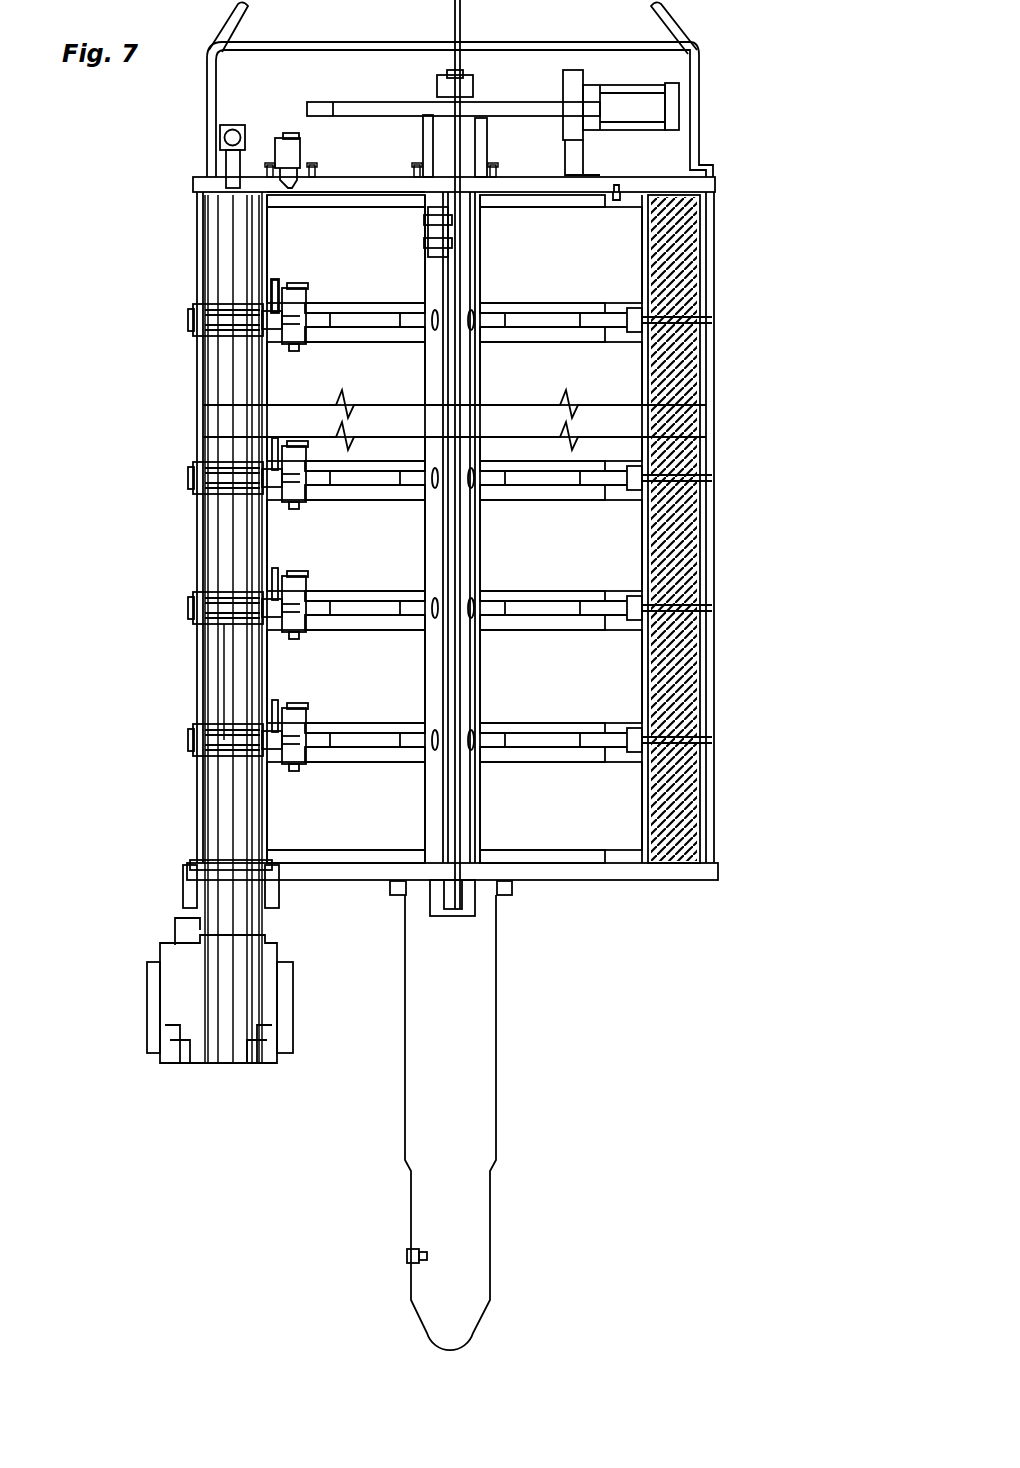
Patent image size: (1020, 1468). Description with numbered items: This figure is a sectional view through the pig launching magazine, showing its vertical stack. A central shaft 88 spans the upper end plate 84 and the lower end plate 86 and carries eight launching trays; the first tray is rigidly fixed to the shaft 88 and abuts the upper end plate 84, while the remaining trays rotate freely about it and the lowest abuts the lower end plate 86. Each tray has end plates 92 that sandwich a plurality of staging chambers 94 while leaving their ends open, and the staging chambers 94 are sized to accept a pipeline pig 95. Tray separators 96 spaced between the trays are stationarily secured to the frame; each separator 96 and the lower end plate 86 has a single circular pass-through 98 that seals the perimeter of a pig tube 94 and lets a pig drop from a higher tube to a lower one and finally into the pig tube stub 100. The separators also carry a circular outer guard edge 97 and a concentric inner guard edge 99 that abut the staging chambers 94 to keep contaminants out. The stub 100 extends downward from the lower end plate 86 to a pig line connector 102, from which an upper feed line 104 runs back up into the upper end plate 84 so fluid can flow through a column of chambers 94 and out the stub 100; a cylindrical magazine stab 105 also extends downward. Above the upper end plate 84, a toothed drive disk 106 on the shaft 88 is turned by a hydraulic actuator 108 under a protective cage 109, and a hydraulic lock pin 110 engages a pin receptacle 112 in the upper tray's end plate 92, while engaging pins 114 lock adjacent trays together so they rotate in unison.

The upper end plate 84 is at (707, 183).
The lower end plate 86 is at (690, 870).
The central shaft 88 is at (480, 870).
The tray end plate 92 is at (312, 342).
The staging chamber 94 is at (205, 350).
The pipeline pig 95 is at (700, 248).
The tray separator 96 is at (195, 612).
The circular outer guard edge 97 is at (195, 605).
The circular pass-through 98 is at (222, 635).
The circular inner guard edge 99 is at (275, 592).
The pig tube stub 100 is at (190, 912).
The pig line connector 102 is at (285, 980).
The upper feed line 104 is at (222, 140).
The cylindrical magazine stab 105 is at (485, 1098).
The toothed drive disk 106 is at (326, 102).
The hydraulic actuator 108 is at (675, 105).
The protective cage 109 is at (676, 22).
The lock pin 110 is at (283, 140).
The pin receptacle 112 is at (620, 190).
The engaging pin 114 is at (272, 300).